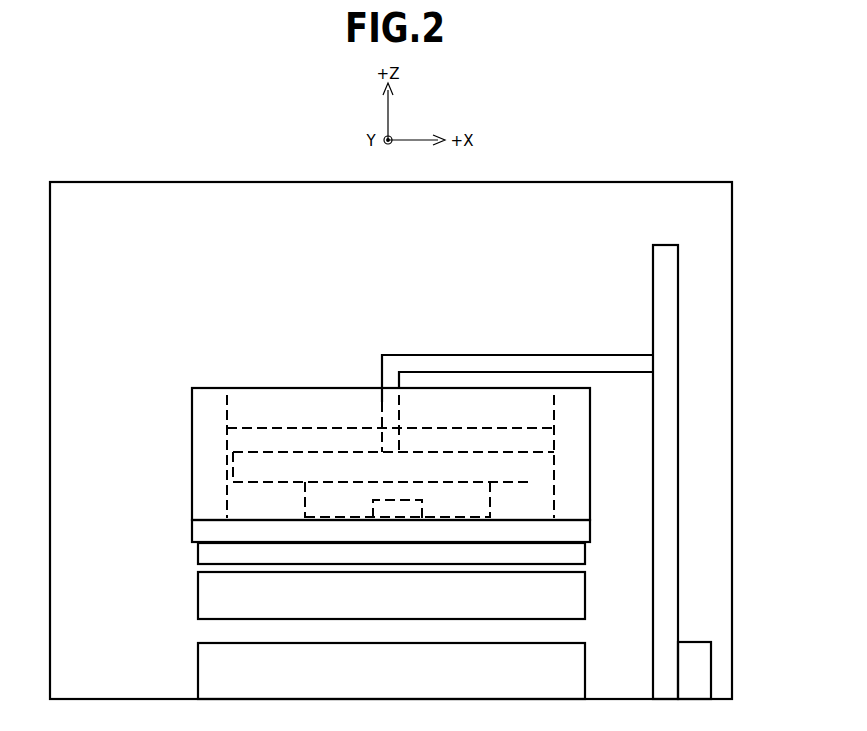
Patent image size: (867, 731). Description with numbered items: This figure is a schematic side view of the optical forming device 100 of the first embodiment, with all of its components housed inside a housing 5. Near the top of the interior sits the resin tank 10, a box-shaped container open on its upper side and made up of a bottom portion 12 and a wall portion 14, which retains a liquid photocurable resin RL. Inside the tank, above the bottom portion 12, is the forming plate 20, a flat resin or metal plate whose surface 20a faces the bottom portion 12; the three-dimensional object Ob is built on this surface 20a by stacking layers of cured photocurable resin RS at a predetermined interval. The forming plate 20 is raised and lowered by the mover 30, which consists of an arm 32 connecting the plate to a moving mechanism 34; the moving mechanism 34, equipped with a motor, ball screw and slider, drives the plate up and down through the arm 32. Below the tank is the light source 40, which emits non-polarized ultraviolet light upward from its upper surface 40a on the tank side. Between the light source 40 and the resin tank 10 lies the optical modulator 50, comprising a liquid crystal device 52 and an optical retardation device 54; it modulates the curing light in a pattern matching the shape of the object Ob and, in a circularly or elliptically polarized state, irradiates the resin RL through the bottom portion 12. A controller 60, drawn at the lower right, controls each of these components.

The optical forming device 100 is at (130, 152).
The housing 5 is at (663, 182).
The mover 30 is at (530, 470).
The arm 32 is at (549, 355).
The moving mechanism 34 is at (526, 285).
The liquid photocurable resin RL is at (295, 440).
The resin tank 10 is at (333, 465).
The wall portion 14 is at (192, 430).
The bottom portion 12 is at (357, 529).
The forming plate 20 is at (433, 464).
The surface 20a is at (533, 483).
The three-dimensional object Ob is at (493, 505).
The cured photocurable resin RS is at (475, 510).
The optical modulator 50 is at (330, 581).
The optical retardation device 54 is at (198, 556).
The liquid crystal device 52 is at (198, 592).
The light source 40 is at (198, 667).
The upper surface 40a is at (212, 643).
The controller 60 is at (693, 642).